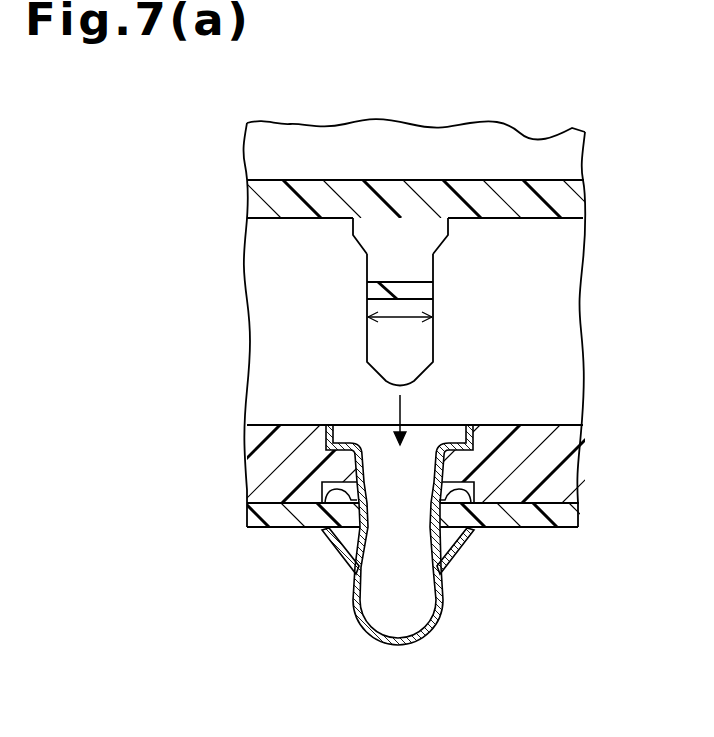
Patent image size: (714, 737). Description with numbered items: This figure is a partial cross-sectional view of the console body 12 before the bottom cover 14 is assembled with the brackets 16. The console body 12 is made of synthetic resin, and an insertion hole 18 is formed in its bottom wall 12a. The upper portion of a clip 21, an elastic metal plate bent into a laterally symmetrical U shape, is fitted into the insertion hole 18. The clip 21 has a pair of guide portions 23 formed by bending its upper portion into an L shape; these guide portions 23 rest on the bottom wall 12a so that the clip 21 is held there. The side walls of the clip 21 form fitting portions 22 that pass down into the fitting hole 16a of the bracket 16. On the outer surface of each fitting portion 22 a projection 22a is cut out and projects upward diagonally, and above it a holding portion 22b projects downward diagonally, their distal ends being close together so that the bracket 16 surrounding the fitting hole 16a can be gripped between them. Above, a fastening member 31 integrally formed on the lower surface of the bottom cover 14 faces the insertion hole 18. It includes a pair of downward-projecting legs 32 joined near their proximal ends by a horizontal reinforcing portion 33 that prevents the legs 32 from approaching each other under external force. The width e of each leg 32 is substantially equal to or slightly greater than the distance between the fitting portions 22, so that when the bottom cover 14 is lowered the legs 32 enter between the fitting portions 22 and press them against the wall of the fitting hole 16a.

The console body 12 is at (565, 315).
The bottom wall 12a is at (570, 468).
The bottom cover 14 is at (570, 203).
The bracket 16 is at (568, 518).
The fitting hole 16a is at (397, 517).
The insertion hole 18 is at (363, 432).
The clip 21 is at (397, 650).
The fitting portion 22 is at (355, 590).
The projection 22a is at (337, 548).
The holding portion 22b is at (325, 527).
The guide portion 23 is at (330, 427).
The fastening member 31 is at (347, 262).
The leg 32 is at (423, 340).
The reinforcing portion 33 is at (418, 291).
The width of leg e is at (397, 322).